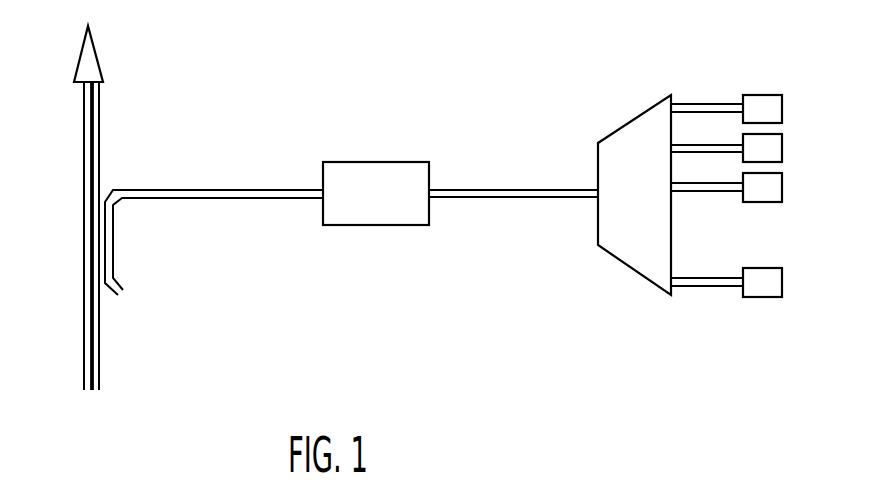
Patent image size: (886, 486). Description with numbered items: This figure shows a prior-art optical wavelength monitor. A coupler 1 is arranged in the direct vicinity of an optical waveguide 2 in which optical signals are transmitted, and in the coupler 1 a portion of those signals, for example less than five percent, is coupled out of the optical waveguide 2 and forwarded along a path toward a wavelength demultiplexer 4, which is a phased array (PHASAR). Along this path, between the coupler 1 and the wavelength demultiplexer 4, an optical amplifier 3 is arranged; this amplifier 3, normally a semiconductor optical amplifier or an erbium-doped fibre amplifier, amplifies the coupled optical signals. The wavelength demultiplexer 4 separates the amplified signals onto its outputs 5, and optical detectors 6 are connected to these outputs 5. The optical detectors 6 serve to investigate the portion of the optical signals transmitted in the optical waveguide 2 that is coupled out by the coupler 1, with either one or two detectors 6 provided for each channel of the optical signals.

The coupler 1 is at (130, 246).
The optical waveguide 2 is at (83, 310).
The optical amplifier 3 is at (381, 225).
The wavelength demultiplexer 4 is at (635, 273).
The outputs 5 is at (673, 193).
The optical detectors 6 is at (778, 195).